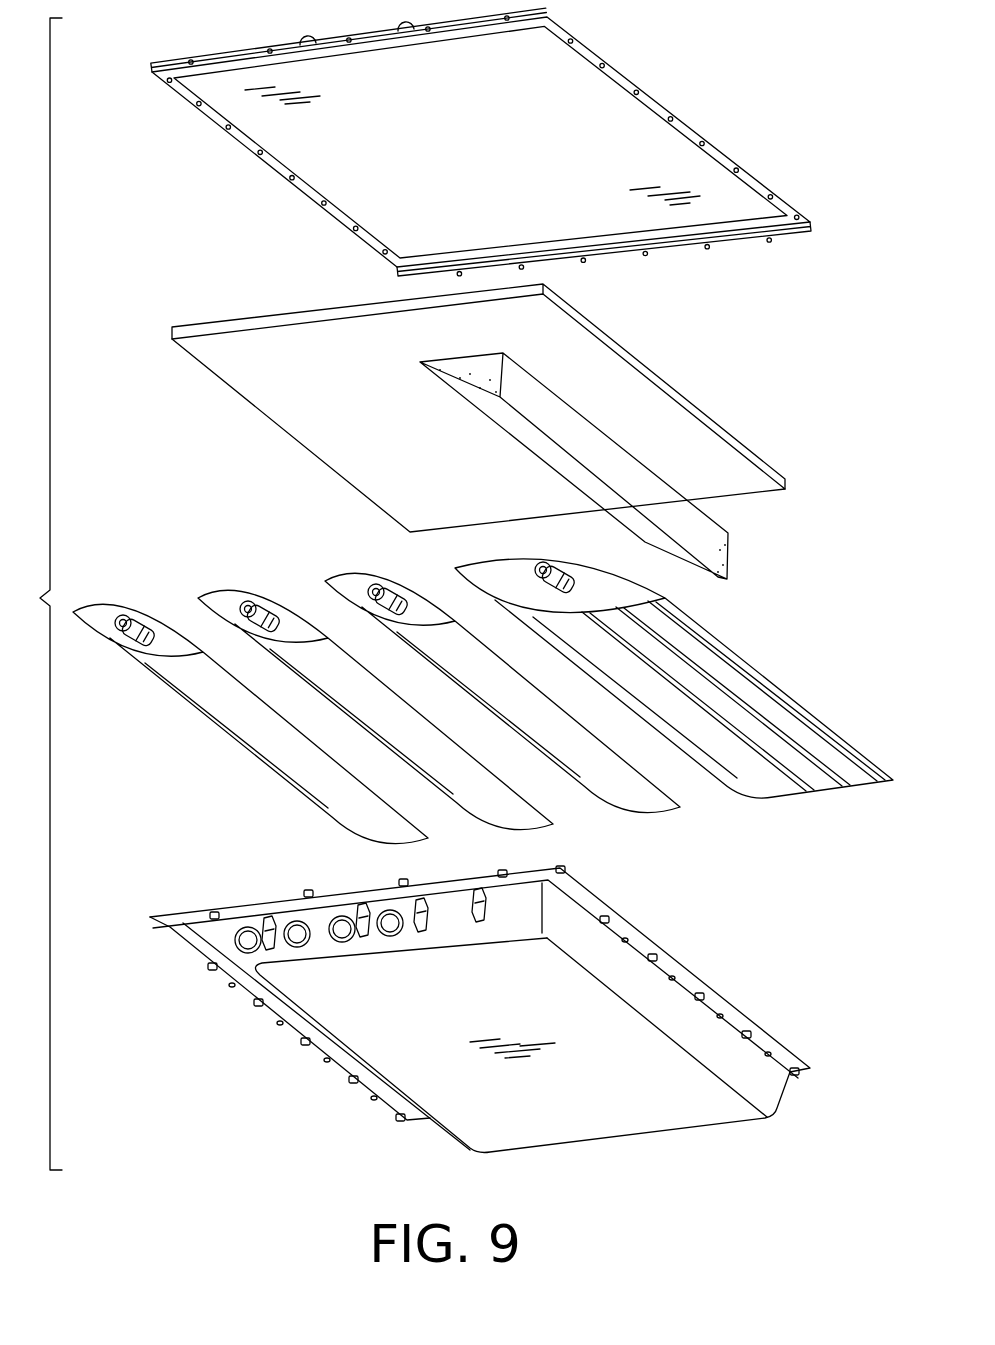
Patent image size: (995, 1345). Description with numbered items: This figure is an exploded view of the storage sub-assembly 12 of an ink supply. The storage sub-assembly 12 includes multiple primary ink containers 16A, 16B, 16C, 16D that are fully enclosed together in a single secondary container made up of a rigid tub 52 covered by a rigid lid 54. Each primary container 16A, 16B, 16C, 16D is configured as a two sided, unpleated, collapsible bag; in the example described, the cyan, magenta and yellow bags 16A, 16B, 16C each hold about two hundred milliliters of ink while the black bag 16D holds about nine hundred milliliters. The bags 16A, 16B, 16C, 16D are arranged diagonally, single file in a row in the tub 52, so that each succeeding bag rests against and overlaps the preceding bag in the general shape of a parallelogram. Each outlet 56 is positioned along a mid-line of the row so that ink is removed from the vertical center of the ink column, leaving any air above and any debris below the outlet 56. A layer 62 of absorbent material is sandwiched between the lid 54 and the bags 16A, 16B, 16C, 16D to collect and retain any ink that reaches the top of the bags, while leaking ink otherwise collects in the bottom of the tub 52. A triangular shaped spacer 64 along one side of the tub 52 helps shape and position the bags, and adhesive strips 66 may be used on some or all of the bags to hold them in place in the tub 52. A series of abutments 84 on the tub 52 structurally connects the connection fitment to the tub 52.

The storage sub-assembly 12 is at (33, 594).
The rigid lid 54 is at (715, 212).
The layer of absorbent material 62 is at (752, 483).
The triangular shaped spacer 64 is at (728, 557).
The primary ink container 16A is at (395, 830).
The primary ink container 16B is at (518, 818).
The primary ink container 16C is at (645, 800).
The primary ink container 16D is at (674, 705).
The outlet 56 is at (119, 616).
The adhesive strips 66 is at (866, 783).
The rigid tub 52 is at (480, 1024).
The abutments 84 is at (474, 925).